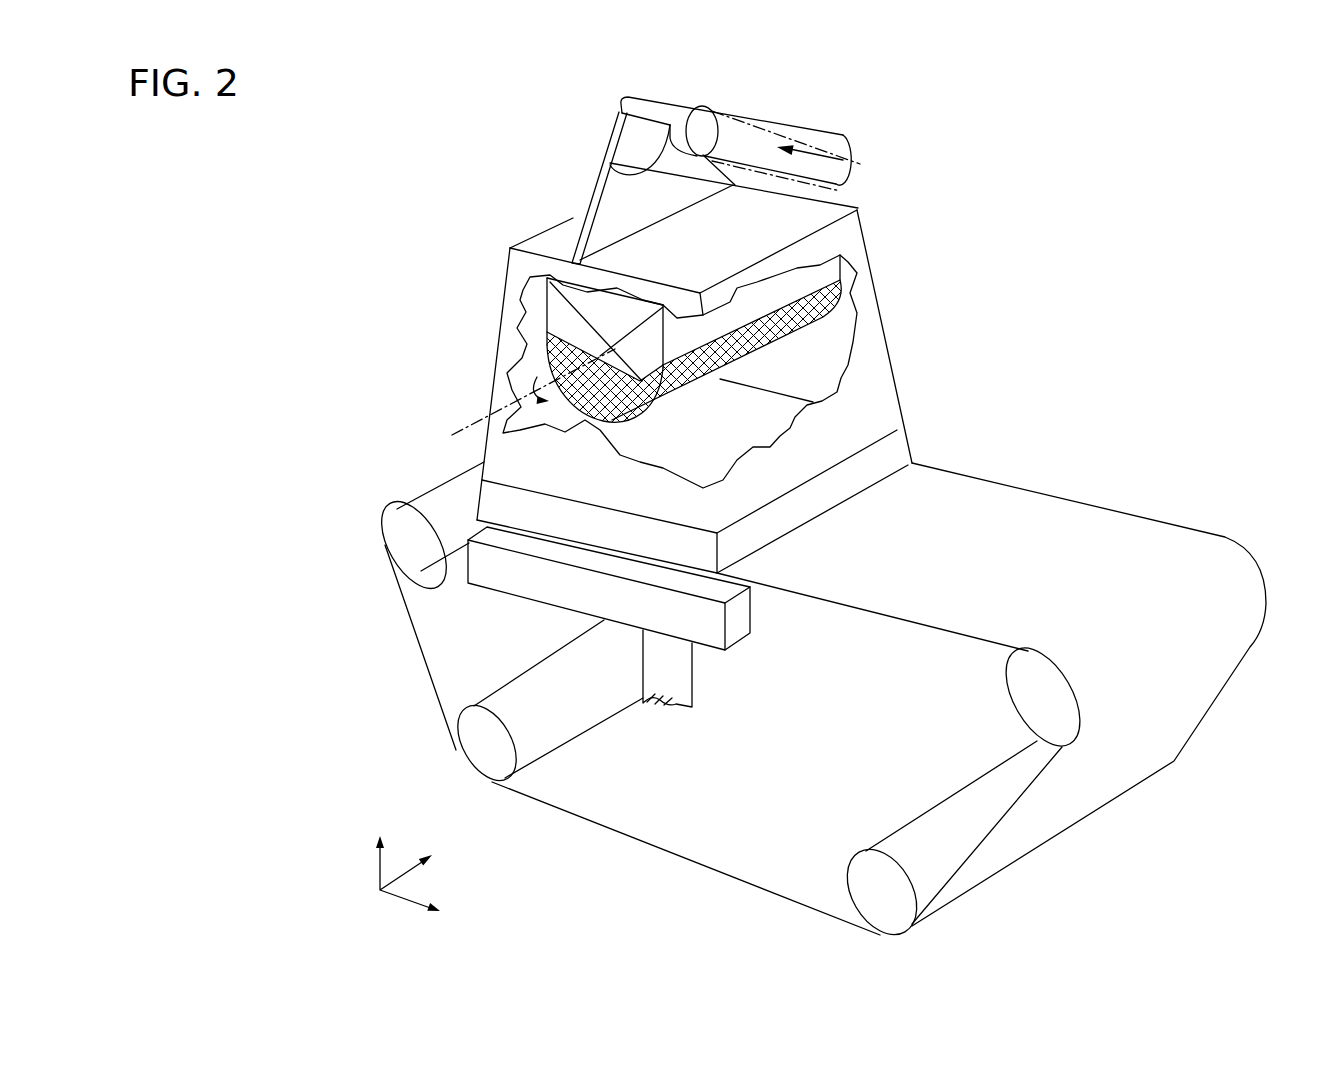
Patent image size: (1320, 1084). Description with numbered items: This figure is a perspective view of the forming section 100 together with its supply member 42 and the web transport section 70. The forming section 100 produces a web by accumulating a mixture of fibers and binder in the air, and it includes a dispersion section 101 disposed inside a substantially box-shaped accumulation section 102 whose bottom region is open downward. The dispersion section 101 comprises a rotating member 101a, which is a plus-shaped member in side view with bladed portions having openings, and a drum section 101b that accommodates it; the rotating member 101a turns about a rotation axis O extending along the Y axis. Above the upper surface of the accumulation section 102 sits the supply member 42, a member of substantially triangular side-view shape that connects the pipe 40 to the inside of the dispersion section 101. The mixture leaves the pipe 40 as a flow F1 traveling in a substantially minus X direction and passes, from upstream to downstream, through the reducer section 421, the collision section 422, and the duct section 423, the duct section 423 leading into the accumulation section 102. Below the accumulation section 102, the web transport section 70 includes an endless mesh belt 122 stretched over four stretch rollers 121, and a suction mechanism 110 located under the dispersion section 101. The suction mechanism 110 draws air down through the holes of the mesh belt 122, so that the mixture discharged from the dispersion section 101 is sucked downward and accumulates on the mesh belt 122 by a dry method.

The forming section 100 is at (978, 199).
The web transport section 70 is at (713, 890).
The stretch rollers 121 is at (470, 747).
The mesh belt 122 is at (605, 827).
The suction mechanism 110 is at (505, 578).
The accumulation section 102 is at (880, 393).
The dispersion section 101 is at (354, 240).
The rotating member 101a is at (607, 323).
The drum section 101b is at (613, 355).
The supply member 42 is at (522, 136).
The collision section 422 is at (619, 99).
The duct section 423 is at (596, 187).
The reducer section 421 is at (658, 160).
The pipe 40 is at (783, 122).
The rotation axis O is at (473, 420).
The flow F1 is at (843, 160).